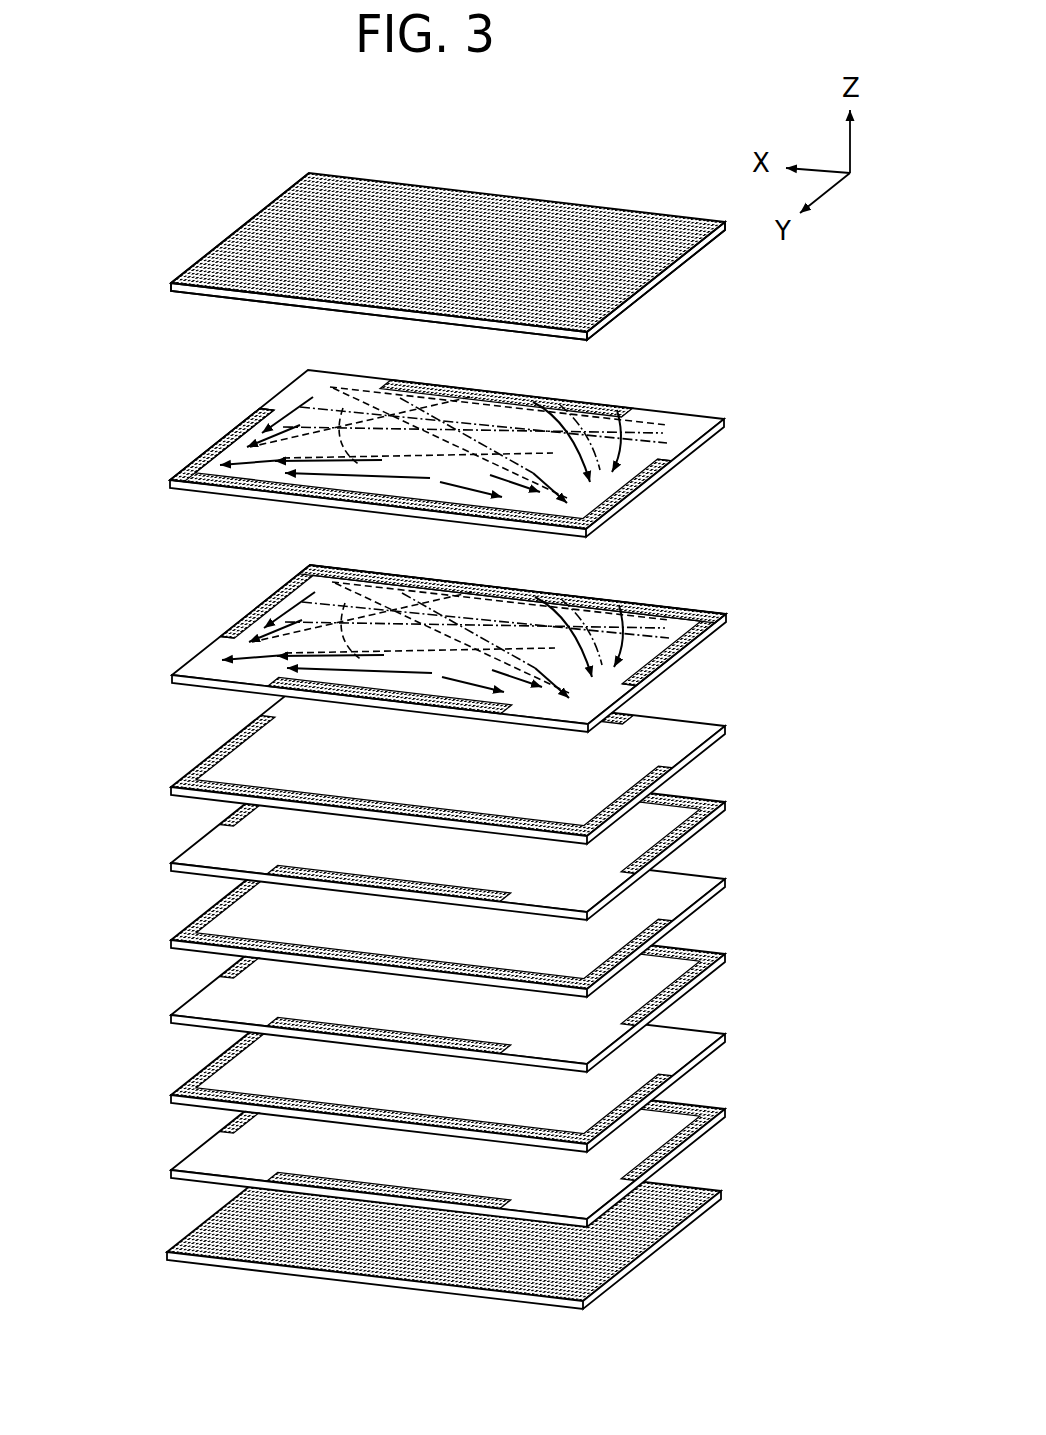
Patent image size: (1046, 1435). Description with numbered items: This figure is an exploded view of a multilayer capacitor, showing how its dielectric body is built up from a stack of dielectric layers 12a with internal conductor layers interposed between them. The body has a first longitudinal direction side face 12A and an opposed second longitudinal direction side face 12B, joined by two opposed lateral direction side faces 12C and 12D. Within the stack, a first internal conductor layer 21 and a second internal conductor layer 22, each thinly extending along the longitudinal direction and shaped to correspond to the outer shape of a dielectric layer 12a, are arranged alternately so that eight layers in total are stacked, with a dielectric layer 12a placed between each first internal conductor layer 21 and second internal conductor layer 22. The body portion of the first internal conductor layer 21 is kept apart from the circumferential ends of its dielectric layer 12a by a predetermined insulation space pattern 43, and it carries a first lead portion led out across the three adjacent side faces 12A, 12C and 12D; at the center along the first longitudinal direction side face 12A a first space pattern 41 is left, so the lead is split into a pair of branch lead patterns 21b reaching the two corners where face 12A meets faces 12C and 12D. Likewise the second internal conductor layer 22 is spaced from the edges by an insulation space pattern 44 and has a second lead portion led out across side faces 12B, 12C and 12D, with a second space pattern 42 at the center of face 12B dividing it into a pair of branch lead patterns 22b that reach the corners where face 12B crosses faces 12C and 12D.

The first longitudinal direction side face 12A is at (538, 197).
The dielectric layer 12a is at (635, 258).
The second longitudinal direction side face 12B is at (235, 296).
The lateral direction side face 12C is at (633, 302).
The lateral direction side face 12D is at (235, 228).
The first internal conductor layer 21 is at (287, 418).
The branch lead pattern 21b is at (310, 380).
The second internal conductor layer 22 is at (225, 648).
The branch lead pattern 22b is at (195, 670).
The first space pattern 41 is at (560, 395).
The second space pattern 42 is at (355, 695).
The insulation space pattern 43 is at (210, 455).
The insulation space pattern 44 is at (643, 608).